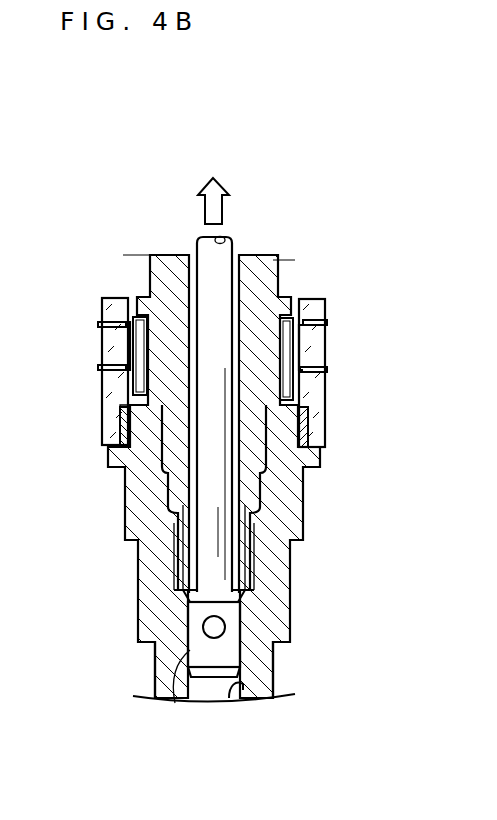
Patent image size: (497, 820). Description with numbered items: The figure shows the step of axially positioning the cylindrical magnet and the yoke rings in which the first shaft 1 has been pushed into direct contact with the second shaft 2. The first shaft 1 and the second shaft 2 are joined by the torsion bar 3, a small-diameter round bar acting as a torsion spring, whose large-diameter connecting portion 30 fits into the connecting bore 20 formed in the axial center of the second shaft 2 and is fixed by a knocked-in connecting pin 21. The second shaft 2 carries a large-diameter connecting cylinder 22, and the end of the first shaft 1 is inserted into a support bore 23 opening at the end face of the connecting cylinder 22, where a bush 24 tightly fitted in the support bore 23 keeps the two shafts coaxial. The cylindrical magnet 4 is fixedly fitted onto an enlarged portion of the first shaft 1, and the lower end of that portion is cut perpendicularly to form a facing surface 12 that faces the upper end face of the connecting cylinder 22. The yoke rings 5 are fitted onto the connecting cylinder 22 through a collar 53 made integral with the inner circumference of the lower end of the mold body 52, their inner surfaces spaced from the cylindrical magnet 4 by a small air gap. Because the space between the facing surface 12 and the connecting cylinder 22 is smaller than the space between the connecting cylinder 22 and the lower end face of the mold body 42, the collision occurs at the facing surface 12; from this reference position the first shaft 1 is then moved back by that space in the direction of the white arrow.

The first shaft 1 is at (257, 255).
The second shaft 2 is at (258, 697).
The torsion bar 3 is at (196, 489).
The cylindrical magnet 4 is at (133, 318).
The mold body 42 is at (160, 300).
The yoke ring 5 is at (307, 299).
The mold body 52 is at (327, 332).
The collar 53 is at (312, 433).
The facing surface 12 is at (120, 410).
The connecting cylinder 22 is at (117, 423).
The support bore 23 is at (260, 513).
The bush 24 is at (175, 557).
The connecting bore 20 is at (227, 703).
The connecting pin 21 is at (214, 632).
The connecting portion 30 is at (175, 703).